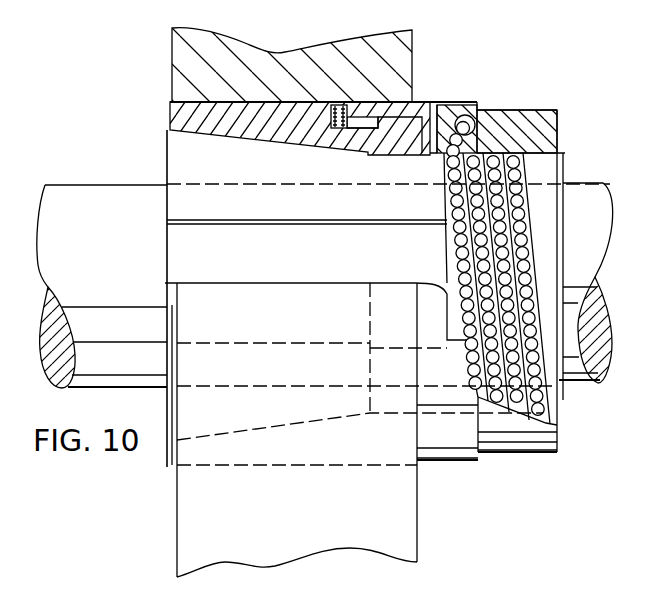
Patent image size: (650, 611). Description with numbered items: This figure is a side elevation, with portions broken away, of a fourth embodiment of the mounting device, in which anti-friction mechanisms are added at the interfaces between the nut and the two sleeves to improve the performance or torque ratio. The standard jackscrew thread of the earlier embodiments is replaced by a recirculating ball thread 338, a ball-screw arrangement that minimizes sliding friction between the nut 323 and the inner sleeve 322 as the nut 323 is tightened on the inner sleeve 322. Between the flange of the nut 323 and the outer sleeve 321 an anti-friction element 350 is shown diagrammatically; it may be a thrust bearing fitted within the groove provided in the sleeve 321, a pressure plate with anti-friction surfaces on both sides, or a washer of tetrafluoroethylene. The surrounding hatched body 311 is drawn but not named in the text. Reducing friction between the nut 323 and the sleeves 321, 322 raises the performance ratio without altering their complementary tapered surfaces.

The housing block 311 is at (401, 63).
The sleeve 321 is at (186, 115).
The inner sleeve 322 is at (170, 167).
The nut 323 is at (540, 110).
The recirculating ball thread 338 is at (482, 128).
The anti-friction element 350 is at (340, 104).